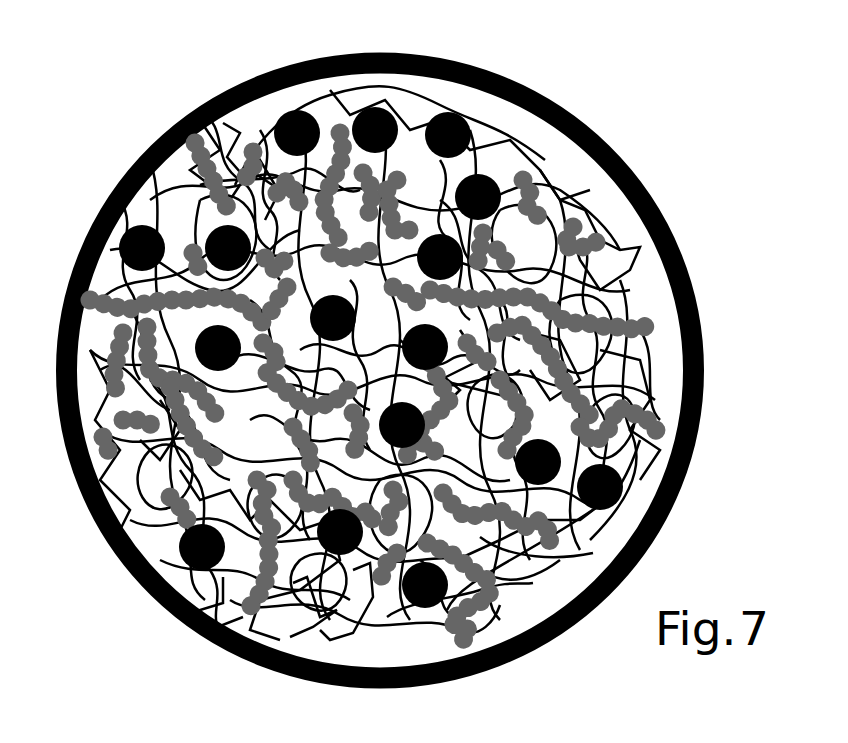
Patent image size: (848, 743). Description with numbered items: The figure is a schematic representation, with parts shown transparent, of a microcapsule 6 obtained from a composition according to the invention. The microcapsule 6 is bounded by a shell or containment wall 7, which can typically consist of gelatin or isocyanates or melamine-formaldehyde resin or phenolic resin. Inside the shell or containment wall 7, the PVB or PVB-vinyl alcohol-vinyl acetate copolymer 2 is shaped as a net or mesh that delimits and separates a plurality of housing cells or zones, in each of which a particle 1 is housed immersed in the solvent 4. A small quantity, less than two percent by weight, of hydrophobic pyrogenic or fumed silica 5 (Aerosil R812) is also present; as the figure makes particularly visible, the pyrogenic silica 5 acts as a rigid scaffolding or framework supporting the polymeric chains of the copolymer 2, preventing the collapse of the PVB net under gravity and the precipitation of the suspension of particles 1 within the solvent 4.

The particle 1 is at (136, 226).
The PVB or PVB-vinyl alcohol-vinyl acetate copolymer 2 is at (62, 392).
The solvent 4 is at (146, 456).
The hydrophobic pyrogenic or fumed silica 5 is at (82, 298).
The microcapsule 6 is at (202, 80).
The shell or containment wall 7 is at (552, 628).